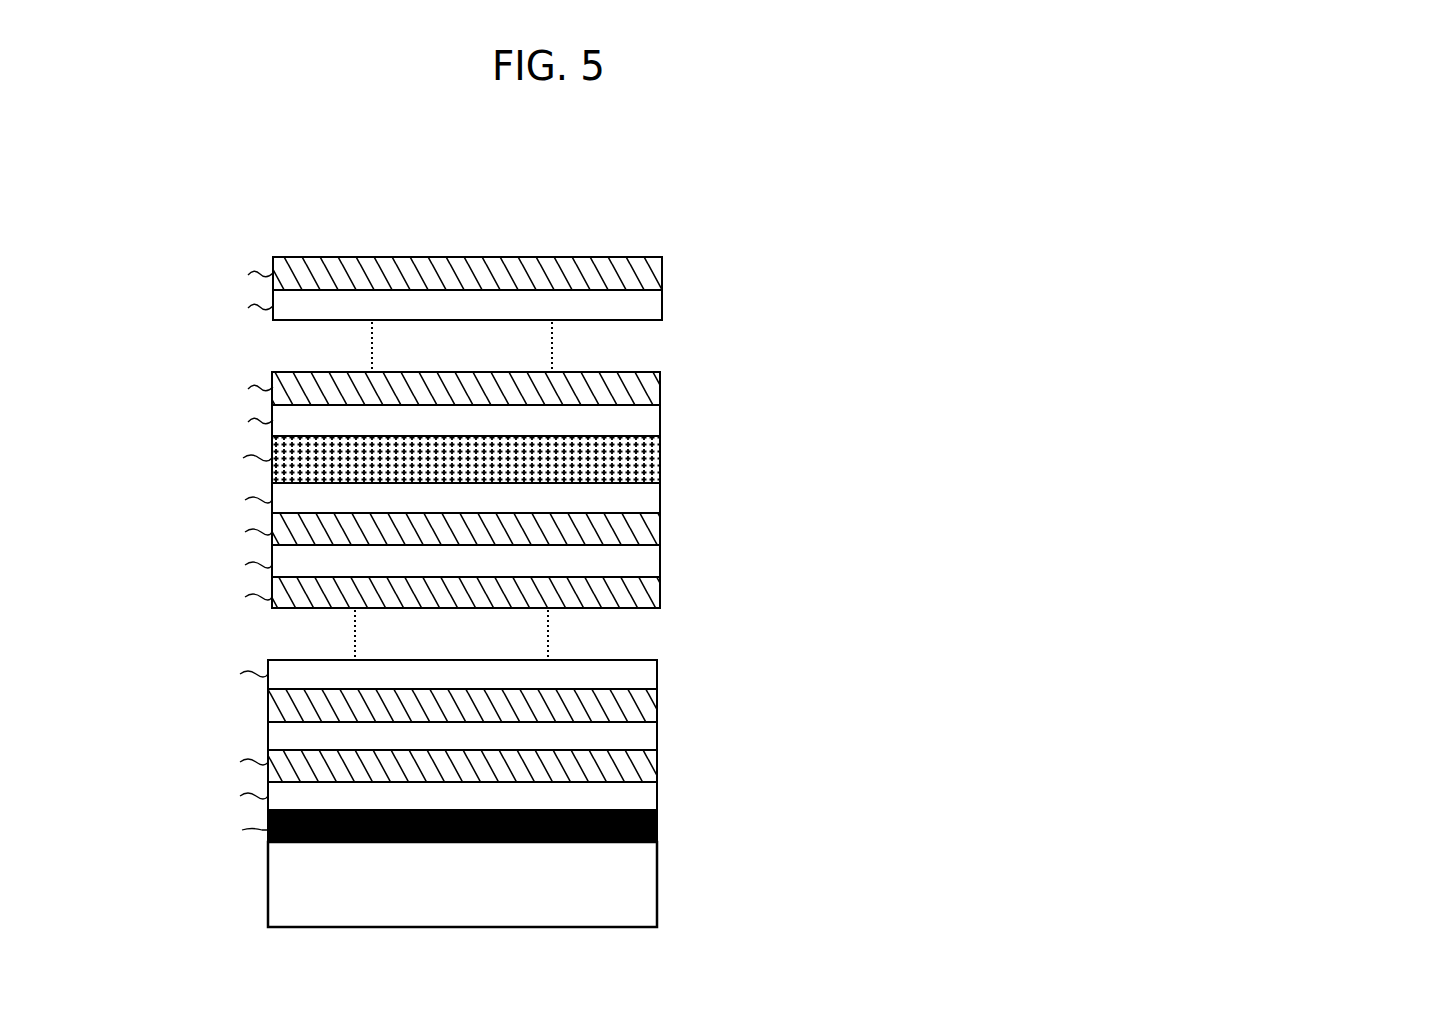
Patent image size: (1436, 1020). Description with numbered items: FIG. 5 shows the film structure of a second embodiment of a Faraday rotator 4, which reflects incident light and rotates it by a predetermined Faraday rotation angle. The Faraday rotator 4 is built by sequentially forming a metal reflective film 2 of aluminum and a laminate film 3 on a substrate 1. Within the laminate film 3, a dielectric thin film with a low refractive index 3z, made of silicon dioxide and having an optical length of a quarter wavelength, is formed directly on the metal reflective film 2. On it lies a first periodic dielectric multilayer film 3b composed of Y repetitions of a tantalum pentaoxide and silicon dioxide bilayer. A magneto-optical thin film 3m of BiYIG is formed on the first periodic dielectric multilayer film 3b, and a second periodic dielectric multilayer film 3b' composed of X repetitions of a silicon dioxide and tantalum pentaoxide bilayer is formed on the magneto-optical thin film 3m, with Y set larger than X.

The substrate 1 is at (632, 894).
The metal reflective film 2 is at (656, 828).
The laminate film 3 is at (1288, 802).
The Faraday rotator 4 is at (1372, 458).
The second periodic dielectric multilayer film 3b' is at (676, 347).
The magneto-optical thin film 3m is at (662, 455).
The first periodic dielectric multilayer film 3b is at (652, 631).
The dielectric thin film with a low refractive index 3z is at (647, 797).